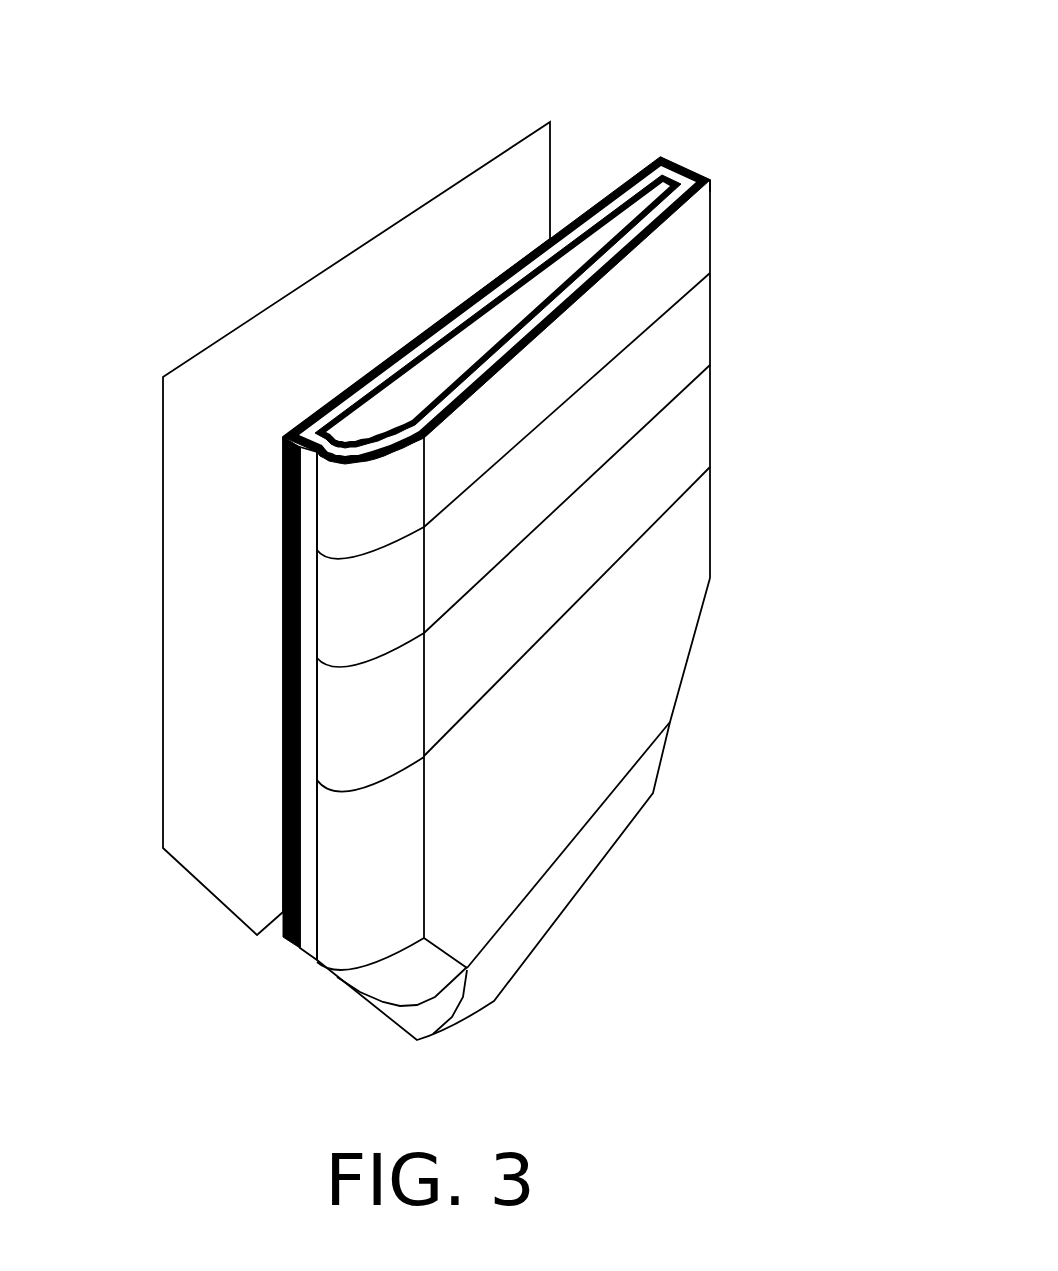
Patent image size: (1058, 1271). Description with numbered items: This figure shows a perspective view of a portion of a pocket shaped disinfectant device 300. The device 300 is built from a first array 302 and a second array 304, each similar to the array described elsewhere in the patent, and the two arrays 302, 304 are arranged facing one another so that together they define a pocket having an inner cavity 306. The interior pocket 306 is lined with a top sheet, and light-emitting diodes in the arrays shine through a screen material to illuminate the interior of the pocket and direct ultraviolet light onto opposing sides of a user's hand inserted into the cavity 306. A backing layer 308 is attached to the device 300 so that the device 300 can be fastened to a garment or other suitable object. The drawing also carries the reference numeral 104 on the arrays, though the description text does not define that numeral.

The pocket shaped disinfectant device 300 is at (120, 84).
The first array 302 is at (641, 193).
The array 304 is at (688, 187).
The inner cavity 306 is at (565, 250).
The backing layer 308 is at (247, 342).
The battery cell 104 is at (443, 327).